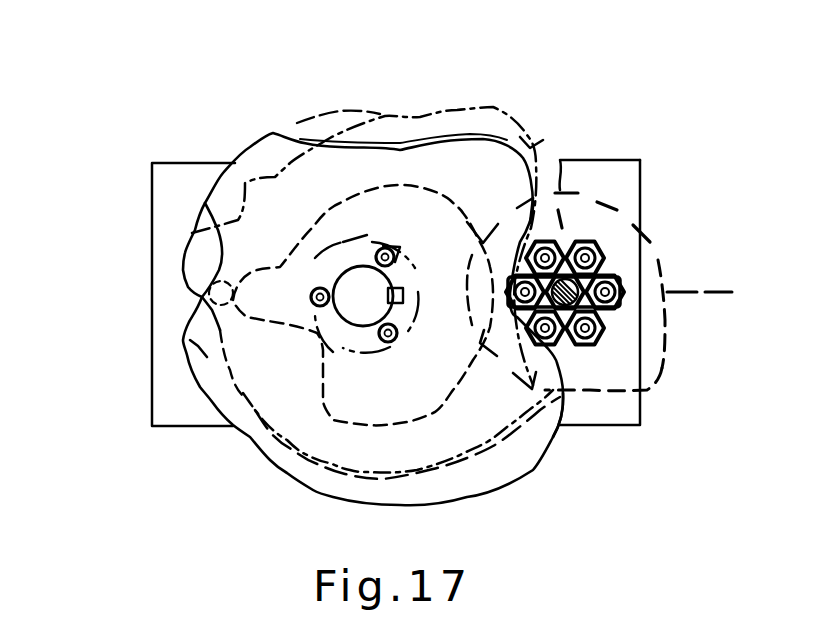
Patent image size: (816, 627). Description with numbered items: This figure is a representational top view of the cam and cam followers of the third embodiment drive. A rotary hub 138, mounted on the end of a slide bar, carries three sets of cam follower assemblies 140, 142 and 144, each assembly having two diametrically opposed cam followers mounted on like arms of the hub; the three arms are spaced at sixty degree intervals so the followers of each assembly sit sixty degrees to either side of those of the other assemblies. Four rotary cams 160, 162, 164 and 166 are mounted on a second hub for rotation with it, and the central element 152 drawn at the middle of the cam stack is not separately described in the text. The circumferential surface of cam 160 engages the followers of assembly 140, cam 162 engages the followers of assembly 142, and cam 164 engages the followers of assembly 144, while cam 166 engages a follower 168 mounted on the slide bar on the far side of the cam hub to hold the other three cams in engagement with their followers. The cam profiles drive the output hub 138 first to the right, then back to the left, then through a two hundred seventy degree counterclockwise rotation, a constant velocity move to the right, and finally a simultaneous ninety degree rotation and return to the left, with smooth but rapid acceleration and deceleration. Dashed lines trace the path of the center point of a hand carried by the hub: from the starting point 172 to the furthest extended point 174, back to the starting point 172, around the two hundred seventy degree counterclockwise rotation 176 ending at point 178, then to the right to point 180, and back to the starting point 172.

The rotary hub 138 is at (607, 266).
The cam follower assembly 140 is at (636, 314).
The cam follower assembly 142 is at (617, 236).
The cam follower assembly 144 is at (613, 361).
The hub 152 is at (357, 267).
The rotary cam 160 is at (323, 494).
The rotary cam 162 is at (500, 441).
The rotary cam 164 is at (487, 107).
The rotary cam 166 is at (323, 367).
The follower 168 is at (186, 311).
The starting point 172 is at (668, 285).
The furthest extended point 174 is at (729, 292).
The counterclockwise rotation 176 is at (589, 192).
The end point of rotation 178 is at (577, 390).
The rightward point 180 is at (647, 392).